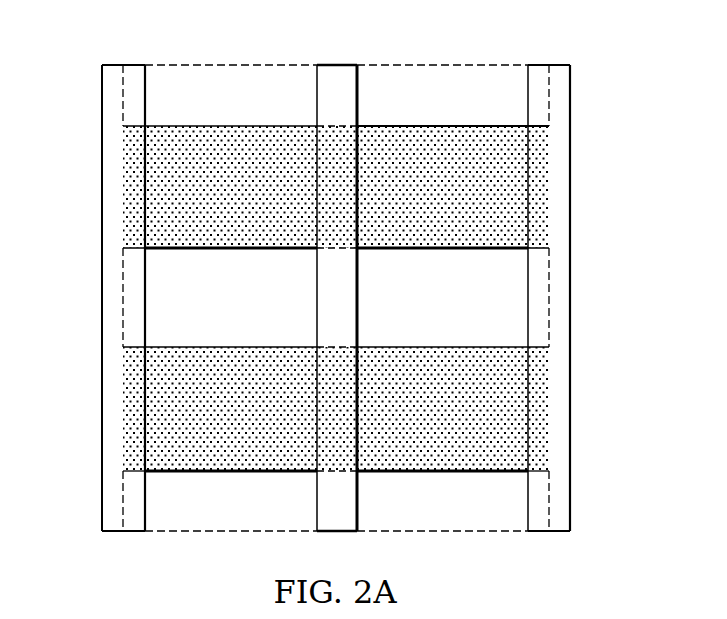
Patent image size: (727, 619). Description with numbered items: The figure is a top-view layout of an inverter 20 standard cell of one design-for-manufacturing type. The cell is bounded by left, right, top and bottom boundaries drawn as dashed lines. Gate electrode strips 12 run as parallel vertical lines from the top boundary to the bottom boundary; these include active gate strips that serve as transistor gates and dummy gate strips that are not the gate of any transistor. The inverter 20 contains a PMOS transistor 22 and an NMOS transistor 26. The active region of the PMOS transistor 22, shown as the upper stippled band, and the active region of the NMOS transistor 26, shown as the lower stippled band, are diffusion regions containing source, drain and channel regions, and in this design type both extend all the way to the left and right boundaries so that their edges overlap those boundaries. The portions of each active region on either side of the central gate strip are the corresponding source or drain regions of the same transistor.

The inverter 20 is at (343, 296).
The gate electrode strips 12 is at (335, 68).
The PMOS transistor 22 is at (378, 98).
The NMOS transistor 26 is at (388, 330).